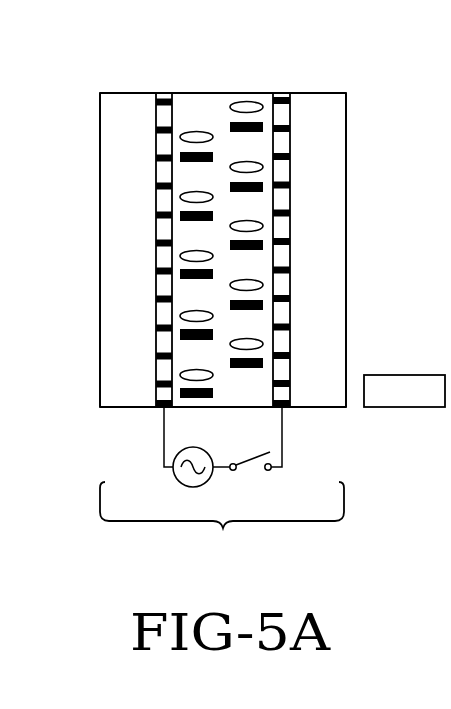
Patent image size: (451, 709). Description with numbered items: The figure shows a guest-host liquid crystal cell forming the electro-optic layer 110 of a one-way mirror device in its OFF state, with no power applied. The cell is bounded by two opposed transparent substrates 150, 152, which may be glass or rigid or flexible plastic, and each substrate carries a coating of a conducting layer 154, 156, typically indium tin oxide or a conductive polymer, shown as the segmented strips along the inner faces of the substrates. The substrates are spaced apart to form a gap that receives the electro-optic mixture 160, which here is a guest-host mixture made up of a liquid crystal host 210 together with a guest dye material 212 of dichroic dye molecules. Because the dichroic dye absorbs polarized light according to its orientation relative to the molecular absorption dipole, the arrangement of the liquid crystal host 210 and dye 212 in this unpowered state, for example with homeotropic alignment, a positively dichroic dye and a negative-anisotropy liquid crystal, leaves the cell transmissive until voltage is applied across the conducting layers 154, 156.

The electro-optical layer 110 is at (226, 291).
The transparent substrate 150 is at (132, 112).
The transparent substrate 152 is at (313, 112).
The conducting layer 154 is at (163, 203).
The conducting layer 156 is at (280, 203).
The electro-optic mixture 160 is at (207, 117).
The liquid crystal host 210 is at (248, 103).
The guest dye material 212 is at (200, 278).